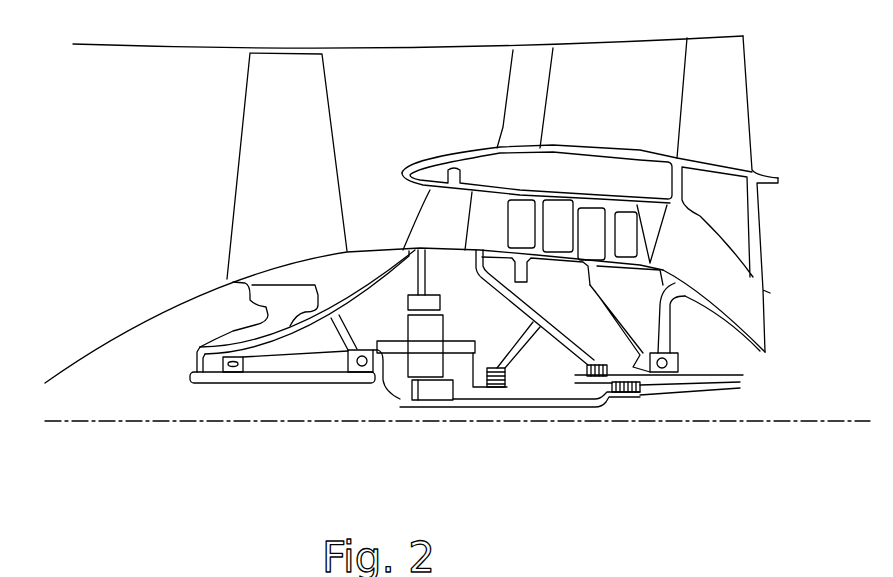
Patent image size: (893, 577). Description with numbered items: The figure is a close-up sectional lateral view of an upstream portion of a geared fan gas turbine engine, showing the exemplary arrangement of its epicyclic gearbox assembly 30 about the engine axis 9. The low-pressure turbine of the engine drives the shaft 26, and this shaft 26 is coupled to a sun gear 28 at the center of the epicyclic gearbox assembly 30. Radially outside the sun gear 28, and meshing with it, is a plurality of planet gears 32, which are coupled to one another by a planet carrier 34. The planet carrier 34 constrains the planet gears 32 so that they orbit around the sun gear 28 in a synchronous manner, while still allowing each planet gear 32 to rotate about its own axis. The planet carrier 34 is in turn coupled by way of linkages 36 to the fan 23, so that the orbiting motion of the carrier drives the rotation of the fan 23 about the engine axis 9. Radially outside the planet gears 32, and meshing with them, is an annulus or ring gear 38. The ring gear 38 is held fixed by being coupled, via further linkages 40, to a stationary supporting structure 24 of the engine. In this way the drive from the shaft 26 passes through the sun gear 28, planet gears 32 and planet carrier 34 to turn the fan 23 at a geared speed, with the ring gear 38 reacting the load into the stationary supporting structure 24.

The engine axis 9 is at (215, 428).
The fan 23 is at (253, 168).
The stationary supporting structure 24 is at (420, 210).
The shaft 26 is at (562, 402).
The sun gear 28 is at (427, 390).
The epicyclic gearbox assembly 30 is at (380, 398).
The planet gears 32 is at (398, 380).
The planet carrier 34 is at (462, 380).
The linkages 36 is at (385, 360).
The ring gear 38 is at (408, 305).
The linkages 40 is at (430, 283).